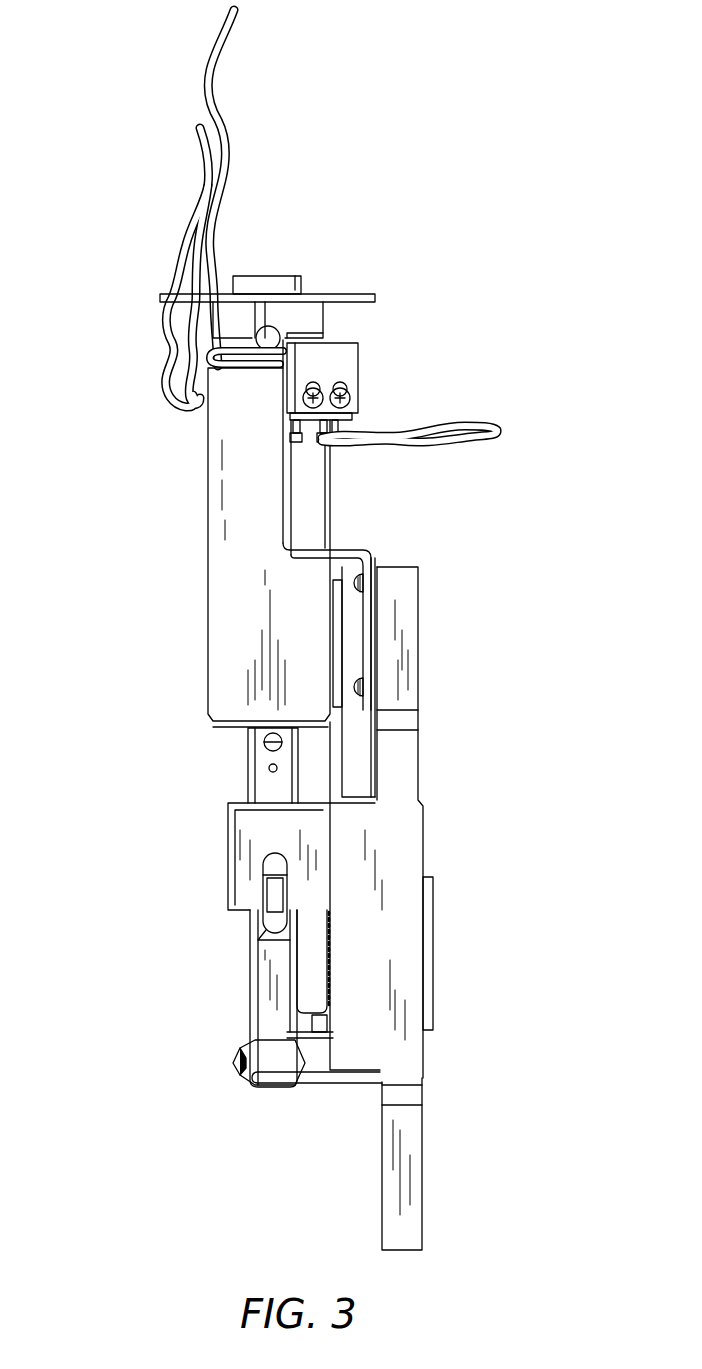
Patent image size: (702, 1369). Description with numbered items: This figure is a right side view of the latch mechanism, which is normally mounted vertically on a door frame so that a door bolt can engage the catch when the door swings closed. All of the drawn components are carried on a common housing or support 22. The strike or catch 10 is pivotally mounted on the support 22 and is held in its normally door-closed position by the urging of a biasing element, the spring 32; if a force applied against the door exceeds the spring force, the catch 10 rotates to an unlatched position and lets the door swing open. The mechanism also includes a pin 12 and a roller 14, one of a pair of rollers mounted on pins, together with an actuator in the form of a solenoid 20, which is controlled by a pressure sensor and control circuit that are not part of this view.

The catch 10 is at (247, 978).
The pin 12 is at (248, 772).
The roller 14 is at (255, 952).
The solenoid 20 is at (227, 602).
The support 22 is at (410, 1242).
The spring 32 is at (330, 962).